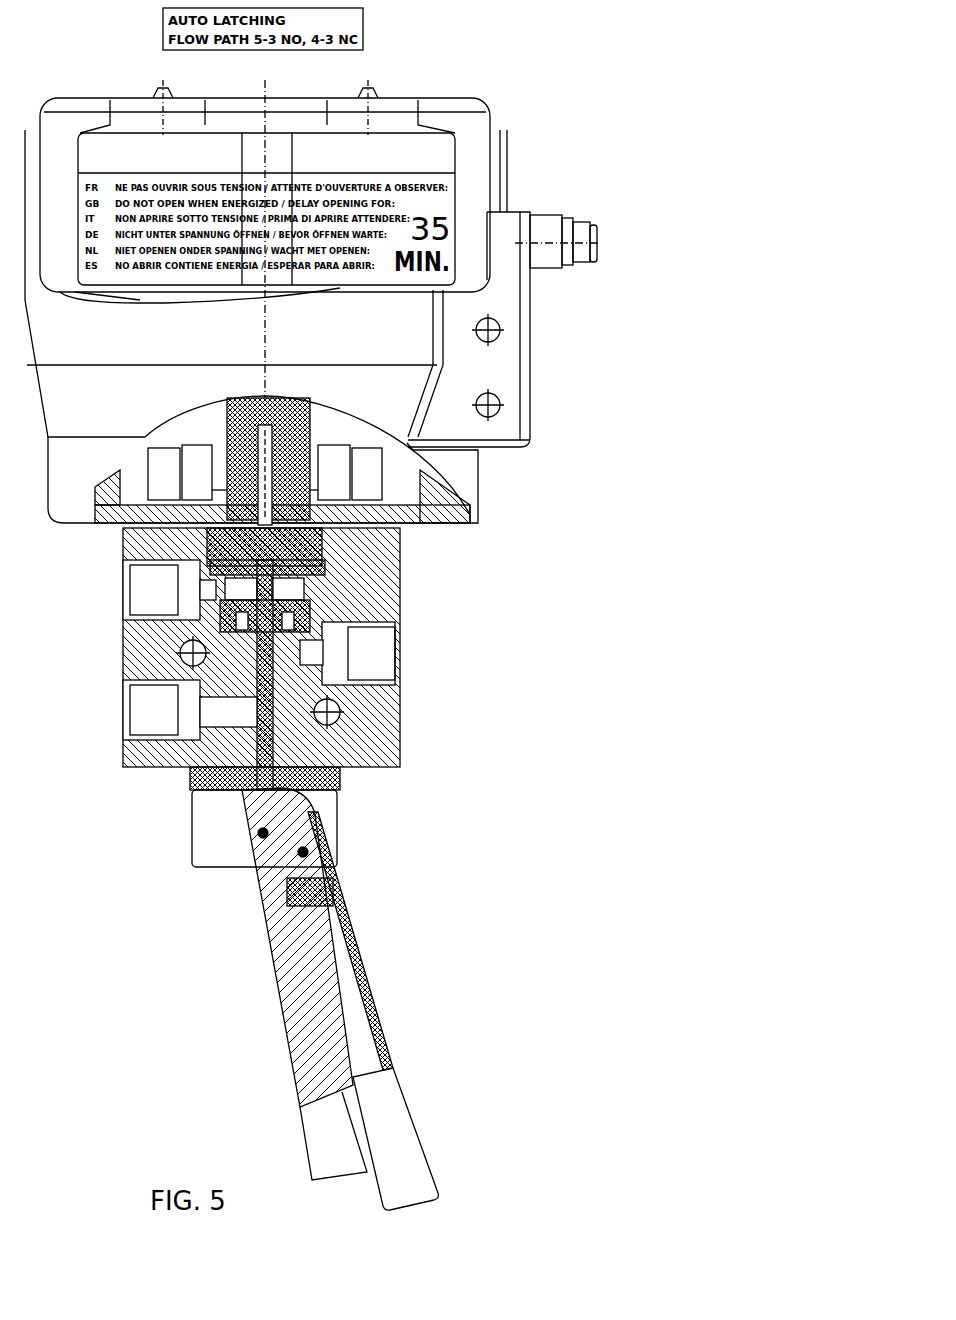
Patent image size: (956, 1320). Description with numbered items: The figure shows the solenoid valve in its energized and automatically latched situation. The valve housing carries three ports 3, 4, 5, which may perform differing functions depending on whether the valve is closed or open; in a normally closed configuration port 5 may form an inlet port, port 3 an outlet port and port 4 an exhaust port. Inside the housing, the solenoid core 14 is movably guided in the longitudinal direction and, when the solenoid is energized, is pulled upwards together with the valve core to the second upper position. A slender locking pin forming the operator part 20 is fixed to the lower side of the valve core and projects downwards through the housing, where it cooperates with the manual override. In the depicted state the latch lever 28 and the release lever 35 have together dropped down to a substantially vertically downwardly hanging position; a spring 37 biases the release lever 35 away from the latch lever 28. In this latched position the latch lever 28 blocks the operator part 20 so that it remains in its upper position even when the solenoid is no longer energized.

The port 3 is at (325, 652).
The port 4 is at (220, 593).
The port 5 is at (270, 712).
The solenoid core 14 is at (400, 538).
The operator part 20 is at (400, 694).
The latch lever 28 is at (322, 993).
The release lever 35 is at (392, 1115).
The spring 37 is at (330, 892).